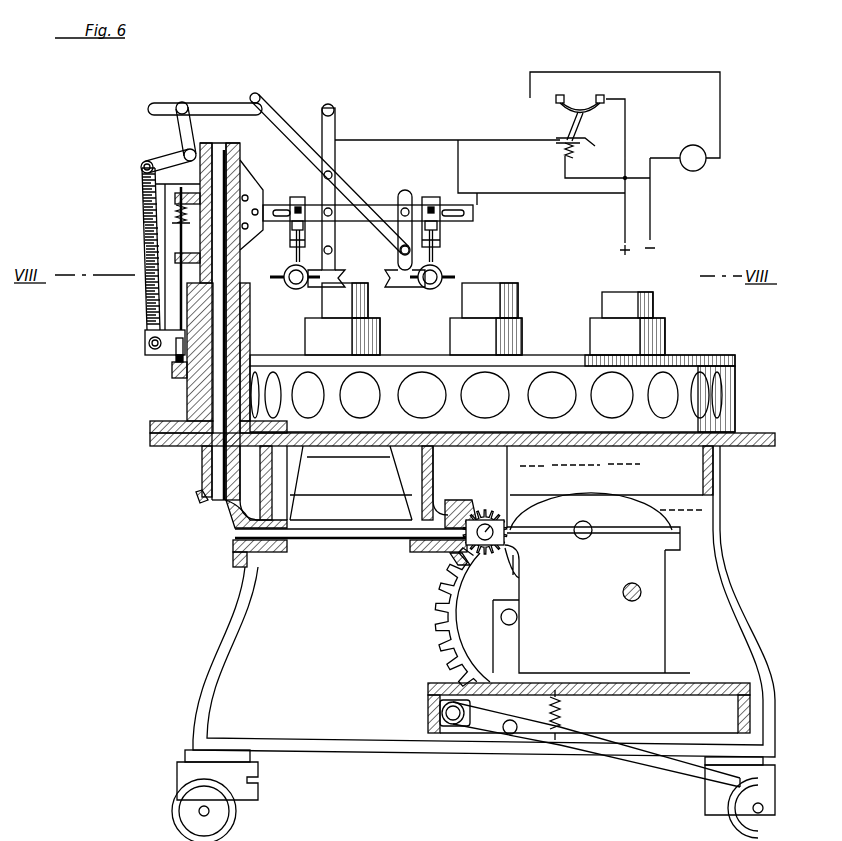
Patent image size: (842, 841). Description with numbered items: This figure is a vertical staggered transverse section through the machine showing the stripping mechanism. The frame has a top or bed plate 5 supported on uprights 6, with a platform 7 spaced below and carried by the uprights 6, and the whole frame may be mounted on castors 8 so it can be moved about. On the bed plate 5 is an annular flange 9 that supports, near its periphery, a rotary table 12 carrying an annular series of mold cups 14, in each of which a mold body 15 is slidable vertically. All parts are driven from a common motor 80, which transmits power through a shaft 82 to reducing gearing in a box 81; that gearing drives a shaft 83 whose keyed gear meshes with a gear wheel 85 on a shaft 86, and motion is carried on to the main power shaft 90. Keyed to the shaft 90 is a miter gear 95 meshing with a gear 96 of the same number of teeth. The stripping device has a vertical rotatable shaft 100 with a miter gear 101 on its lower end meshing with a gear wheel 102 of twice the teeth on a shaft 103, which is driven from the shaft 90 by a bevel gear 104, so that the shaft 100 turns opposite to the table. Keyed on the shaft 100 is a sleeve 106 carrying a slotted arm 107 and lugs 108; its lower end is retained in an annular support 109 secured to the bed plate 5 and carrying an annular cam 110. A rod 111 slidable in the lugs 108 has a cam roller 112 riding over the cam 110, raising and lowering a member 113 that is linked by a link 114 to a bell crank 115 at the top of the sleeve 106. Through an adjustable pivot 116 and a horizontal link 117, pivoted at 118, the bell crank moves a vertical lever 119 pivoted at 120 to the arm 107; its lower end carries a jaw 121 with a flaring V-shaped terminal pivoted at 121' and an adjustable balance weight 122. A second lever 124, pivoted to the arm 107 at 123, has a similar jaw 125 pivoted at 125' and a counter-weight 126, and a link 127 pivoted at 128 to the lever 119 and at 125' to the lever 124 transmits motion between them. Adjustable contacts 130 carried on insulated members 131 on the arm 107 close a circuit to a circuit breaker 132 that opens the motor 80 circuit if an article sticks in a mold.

The top or bed plate 5 is at (735, 433).
The uprights 6 is at (207, 666).
The platform 7 is at (706, 688).
The castors 8 is at (238, 812).
The annular flange 9 is at (726, 402).
The table 12 is at (700, 356).
The mold cups 14 is at (382, 345).
The mold body 15 is at (370, 296).
The motor 80 is at (693, 172).
The box 81 is at (604, 559).
The shaft 82 is at (628, 601).
The shaft 83 is at (589, 538).
The gear wheel 85 is at (436, 633).
The shaft 86 is at (501, 617).
The main power shaft 90 is at (450, 560).
The miter gear 95 is at (519, 575).
The gear 96 is at (497, 520).
The vertical rotatable shaft 100 is at (215, 470).
The miter gear 101 is at (198, 500).
The gear wheel 102 is at (237, 562).
The shaft 103 is at (355, 540).
The bevel gear 104 is at (440, 560).
The sleeve 106 is at (155, 184).
The slotted arm 107 is at (276, 206).
The lugs 108 is at (176, 200).
The annular casing or support 109 is at (187, 400).
The annular cam 110 is at (172, 372).
The rod 111 is at (170, 284).
The cam roller 112 is at (176, 358).
The member 113 is at (145, 341).
The link 114 is at (148, 228).
The bell crank 115 is at (158, 155).
The adjustable pivot 116 is at (182, 102).
The horizontal link 117 is at (215, 103).
The pivot 118 is at (335, 110).
The vertical lever 119 is at (336, 142).
The pivot 120 is at (338, 212).
The jaw 121 is at (295, 294).
The pivot 121' is at (288, 230).
The adjustable balance weight 122 is at (300, 290).
The pivot 123 is at (410, 205).
The second lever 124 is at (441, 236).
The jaw 125 is at (427, 299).
The pivot 125' is at (377, 245).
The adjustable counter-weight 126 is at (444, 277).
The link 127 is at (292, 130).
The pivot 128 is at (333, 175).
The contacts 130 is at (284, 277).
The members 131 is at (262, 232).
The circuit breaker 132 is at (574, 114).